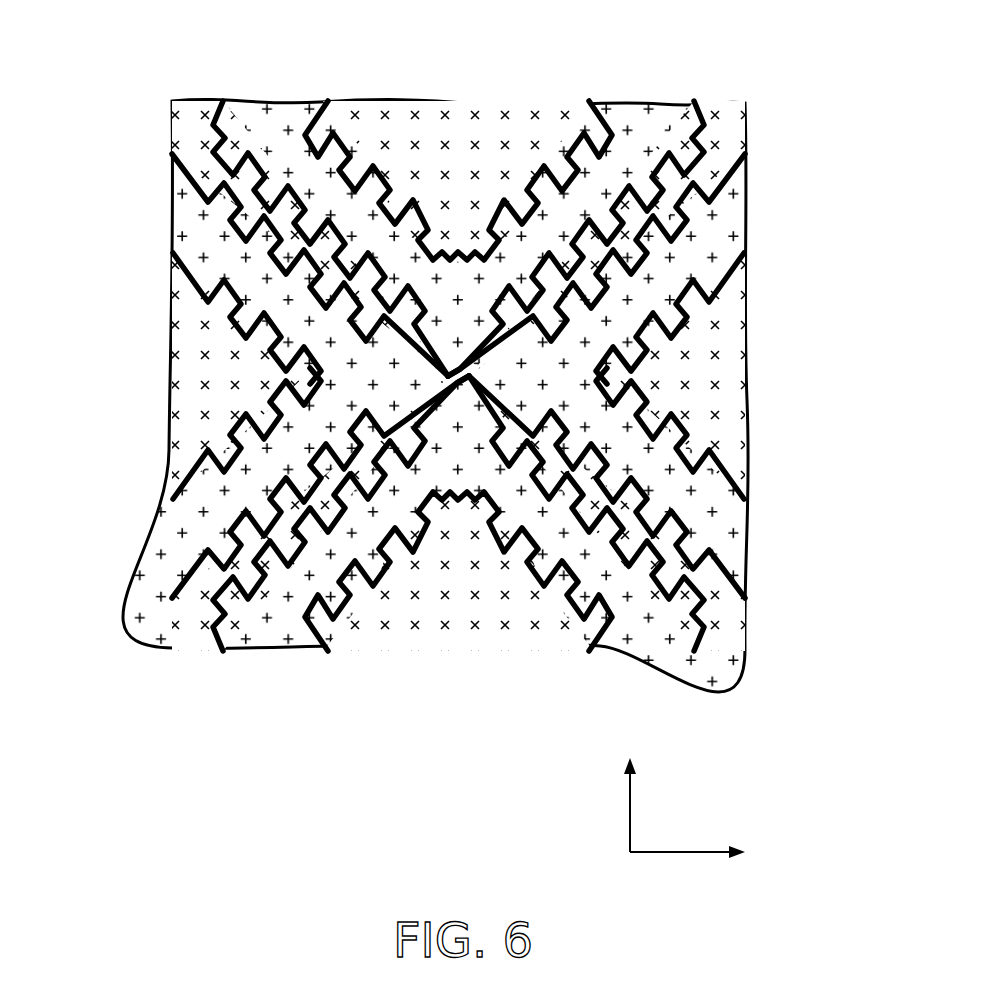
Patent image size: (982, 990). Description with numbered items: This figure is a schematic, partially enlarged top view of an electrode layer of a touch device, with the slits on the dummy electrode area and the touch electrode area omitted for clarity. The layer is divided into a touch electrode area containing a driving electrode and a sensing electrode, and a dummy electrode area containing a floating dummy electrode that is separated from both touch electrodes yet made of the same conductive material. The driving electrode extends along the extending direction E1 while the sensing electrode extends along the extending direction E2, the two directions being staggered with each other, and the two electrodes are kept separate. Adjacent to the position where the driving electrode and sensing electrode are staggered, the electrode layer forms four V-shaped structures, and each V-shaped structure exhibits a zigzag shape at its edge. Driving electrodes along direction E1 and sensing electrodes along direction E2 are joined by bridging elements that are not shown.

The extending direction of the driving electrode E1 is at (691, 872).
The extending direction of the sensing electrode E2 is at (646, 805).